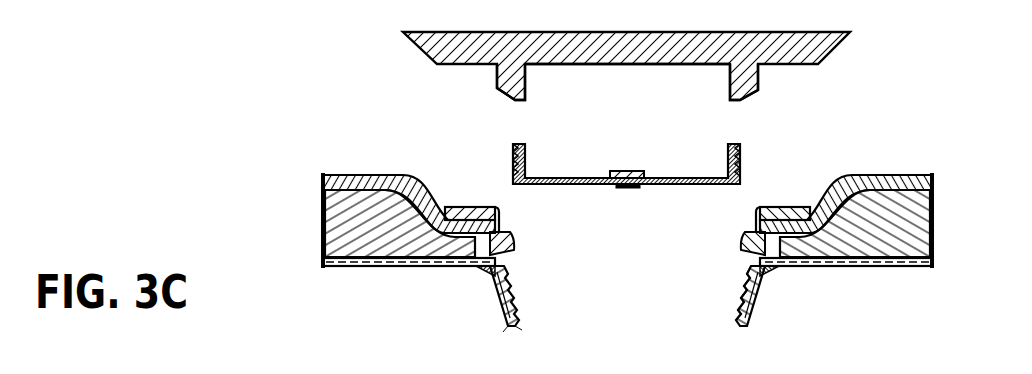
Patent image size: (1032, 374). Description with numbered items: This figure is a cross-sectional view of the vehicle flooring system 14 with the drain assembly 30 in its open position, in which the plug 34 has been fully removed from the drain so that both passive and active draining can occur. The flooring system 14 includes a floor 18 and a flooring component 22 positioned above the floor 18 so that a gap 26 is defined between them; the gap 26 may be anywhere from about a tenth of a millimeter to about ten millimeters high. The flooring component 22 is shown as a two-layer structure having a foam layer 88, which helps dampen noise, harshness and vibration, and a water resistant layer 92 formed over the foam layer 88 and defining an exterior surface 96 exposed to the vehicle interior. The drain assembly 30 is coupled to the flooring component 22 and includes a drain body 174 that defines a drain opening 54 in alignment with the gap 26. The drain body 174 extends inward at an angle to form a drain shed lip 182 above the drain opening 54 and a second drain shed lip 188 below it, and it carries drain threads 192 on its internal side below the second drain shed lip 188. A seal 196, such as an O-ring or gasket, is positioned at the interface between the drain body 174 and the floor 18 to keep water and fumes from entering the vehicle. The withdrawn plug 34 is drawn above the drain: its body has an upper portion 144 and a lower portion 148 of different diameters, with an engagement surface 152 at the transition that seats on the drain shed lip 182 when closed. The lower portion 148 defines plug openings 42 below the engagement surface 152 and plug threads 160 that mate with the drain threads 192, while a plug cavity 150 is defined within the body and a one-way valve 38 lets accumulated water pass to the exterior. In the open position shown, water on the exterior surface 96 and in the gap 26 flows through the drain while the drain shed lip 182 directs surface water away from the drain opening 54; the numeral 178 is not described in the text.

The vehicle flooring system 14 is at (374, 207).
The drain assembly 30 is at (843, 242).
The plug 34 is at (618, 28).
The engagement surface 152 is at (505, 99).
The upper portion 144 is at (770, 82).
The plug opening 42 is at (722, 118).
The one-way valve 38 is at (665, 183).
The plug threads 160 is at (512, 160).
The lower portion 148 is at (754, 165).
The plug cavity 150 is at (644, 148).
The water resistant layer 92 is at (326, 183).
The foam layer 88 is at (345, 225).
The drain shed lip 182 is at (482, 264).
The second drain shed lip 188 is at (497, 285).
The exterior surface 96 is at (920, 175).
The flooring component 22 is at (937, 211).
The gap 26 is at (913, 255).
The floor 18 is at (911, 267).
The seal 196 is at (773, 270).
The drain opening 54 is at (760, 268).
The drain body 174 is at (762, 312).
The drain threads 192 is at (738, 310).
The gap 178 is at (610, 330).